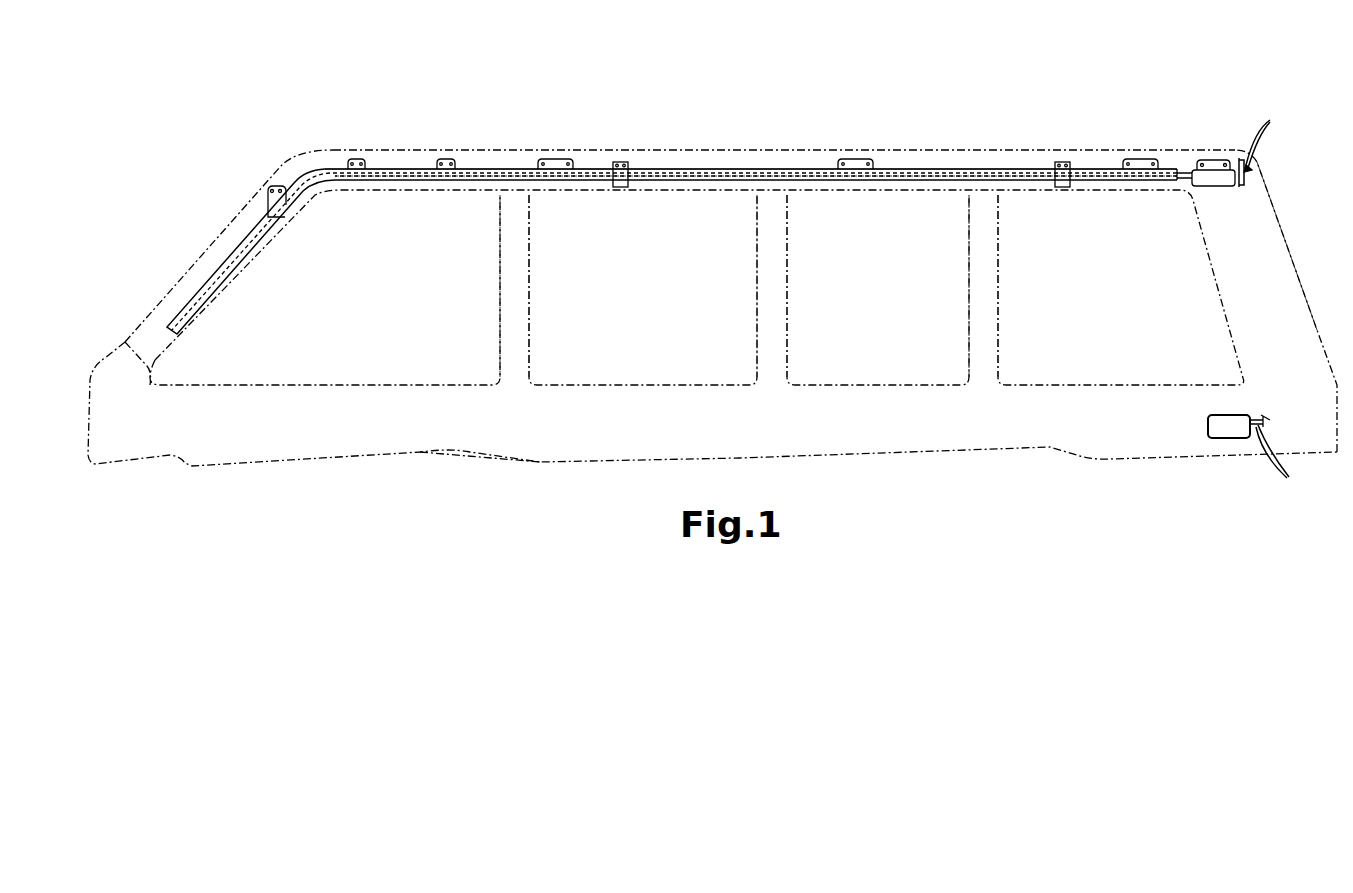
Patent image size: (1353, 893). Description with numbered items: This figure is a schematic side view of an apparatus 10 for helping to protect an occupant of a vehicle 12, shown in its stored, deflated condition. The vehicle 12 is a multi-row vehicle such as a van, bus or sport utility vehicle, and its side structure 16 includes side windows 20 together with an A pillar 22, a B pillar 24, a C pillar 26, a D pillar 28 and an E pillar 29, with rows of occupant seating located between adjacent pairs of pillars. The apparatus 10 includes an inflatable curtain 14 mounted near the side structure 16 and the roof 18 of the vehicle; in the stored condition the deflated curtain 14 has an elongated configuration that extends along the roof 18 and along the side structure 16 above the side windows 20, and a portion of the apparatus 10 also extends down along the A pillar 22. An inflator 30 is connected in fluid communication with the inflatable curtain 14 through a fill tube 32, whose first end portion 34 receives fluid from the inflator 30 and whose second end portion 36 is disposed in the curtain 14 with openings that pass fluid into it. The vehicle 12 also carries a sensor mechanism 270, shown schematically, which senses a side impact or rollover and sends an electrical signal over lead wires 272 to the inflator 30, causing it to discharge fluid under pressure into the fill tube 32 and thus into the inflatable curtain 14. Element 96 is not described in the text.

The apparatus 10 is at (270, 134).
The vehicle 12 is at (198, 188).
The inflatable curtain 14 is at (411, 168).
The side structure 16 is at (536, 432).
The roof 18 is at (781, 150).
The side windows 20 is at (352, 340).
The A pillar 22 is at (192, 292).
The B pillar 24 is at (517, 308).
The C pillar 26 is at (775, 297).
The D pillar 28 is at (983, 303).
The E pillar 29 is at (1278, 277).
The inflator 30 is at (1215, 175).
The fill tube 32 is at (697, 168).
The first end portion 34 is at (1185, 173).
The second end portion 36 is at (511, 168).
The clamp bracket 96 is at (620, 163).
The sensor mechanism 270 is at (1232, 430).
The lead wires 272 is at (1276, 305).